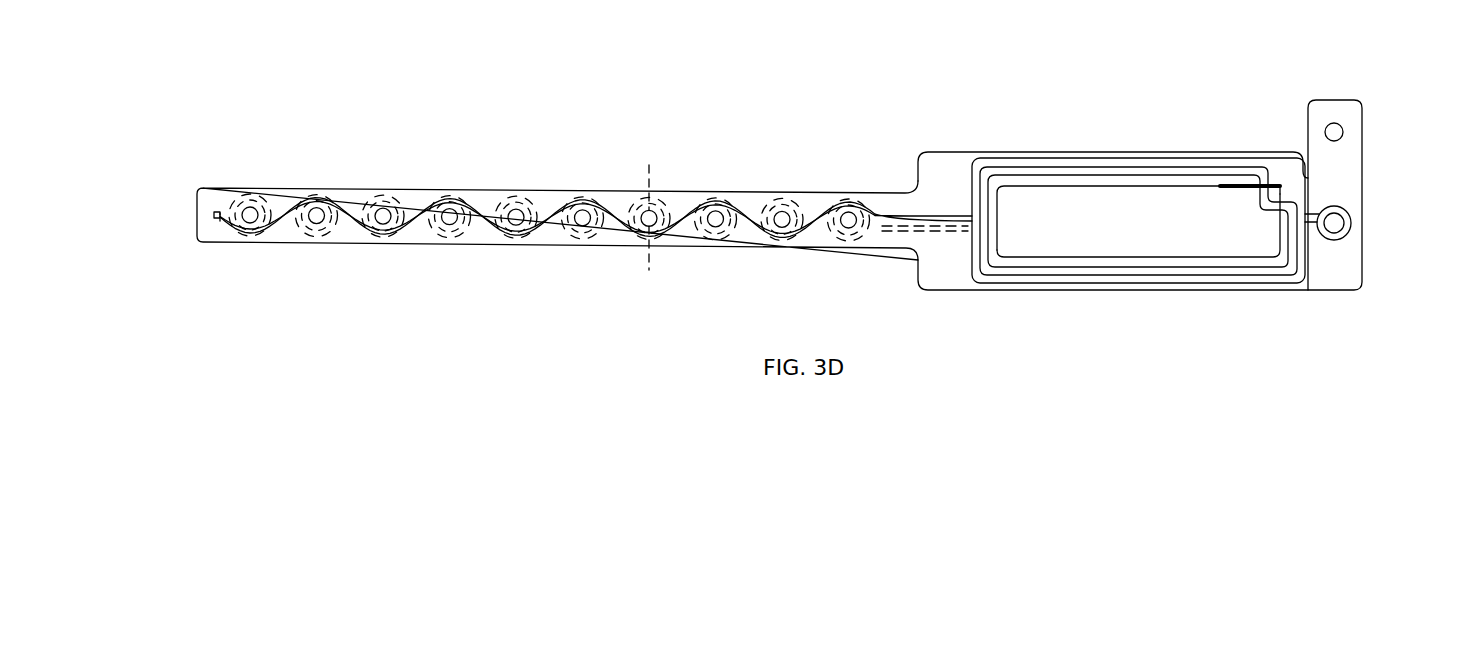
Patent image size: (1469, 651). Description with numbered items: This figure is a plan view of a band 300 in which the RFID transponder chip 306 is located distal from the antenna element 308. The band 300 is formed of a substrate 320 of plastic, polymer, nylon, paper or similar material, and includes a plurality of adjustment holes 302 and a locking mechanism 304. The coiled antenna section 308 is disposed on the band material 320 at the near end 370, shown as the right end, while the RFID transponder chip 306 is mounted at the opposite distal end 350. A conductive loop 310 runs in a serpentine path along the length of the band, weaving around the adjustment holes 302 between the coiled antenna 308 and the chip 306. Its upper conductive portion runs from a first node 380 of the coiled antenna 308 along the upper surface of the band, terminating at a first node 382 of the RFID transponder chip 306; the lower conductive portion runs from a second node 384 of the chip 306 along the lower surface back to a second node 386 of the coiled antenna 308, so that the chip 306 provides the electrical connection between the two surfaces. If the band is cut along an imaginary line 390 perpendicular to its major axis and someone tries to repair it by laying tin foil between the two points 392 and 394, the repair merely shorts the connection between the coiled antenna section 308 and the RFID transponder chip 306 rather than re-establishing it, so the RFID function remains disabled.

The band 300 is at (962, 76).
The adjustment holes 302 is at (314, 207).
The locking mechanism 304 is at (1334, 164).
The RFID transponder chip 306 is at (214, 212).
The antenna element 308 is at (1094, 158).
The conductive loop 310 is at (515, 240).
The substrate 320 is at (985, 280).
The distal end 350 is at (195, 228).
The near end 370 is at (1363, 268).
The first node of coiled antenna 380 is at (972, 217).
The first node of RFID transponder chip 382 is at (221, 222).
The second node of RFID transponder chip 384 is at (221, 212).
The second node of coiled antenna 386 is at (966, 229).
The imaginary line 390 is at (654, 168).
The first point 392 is at (644, 198).
The second point 394 is at (656, 242).